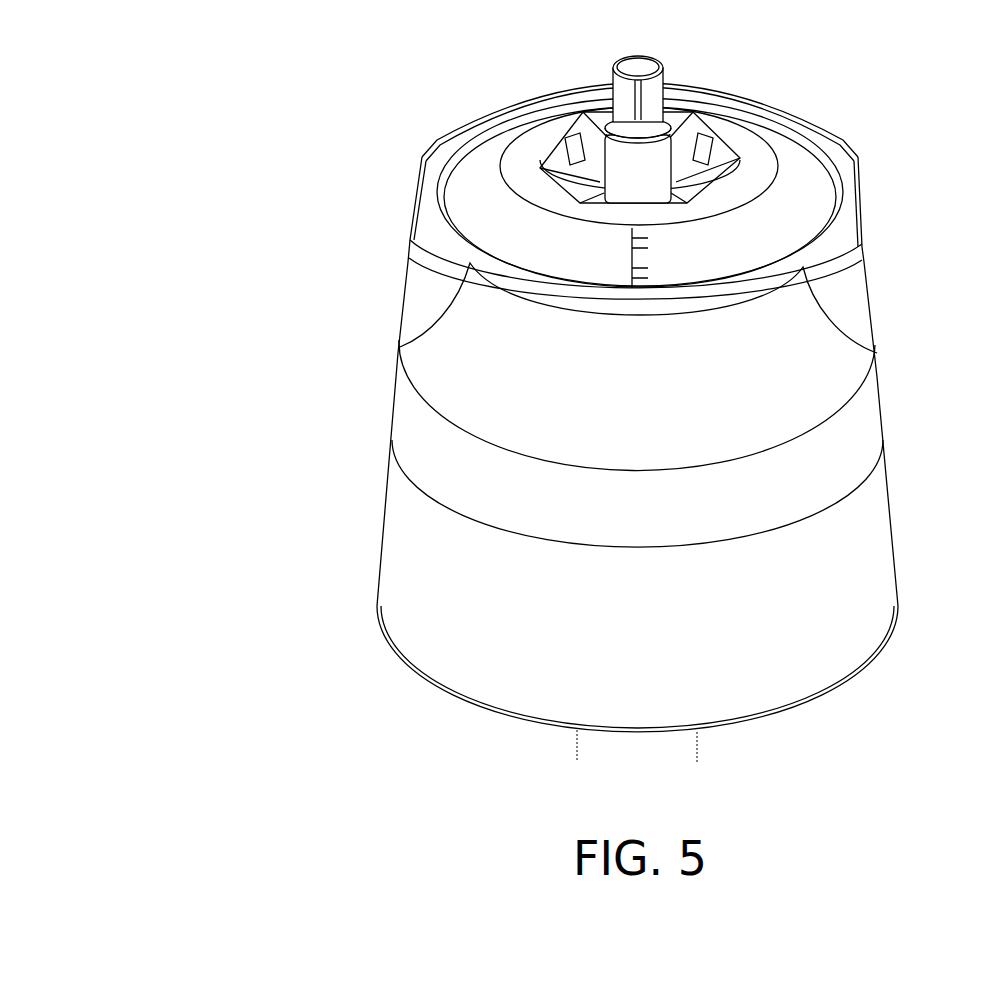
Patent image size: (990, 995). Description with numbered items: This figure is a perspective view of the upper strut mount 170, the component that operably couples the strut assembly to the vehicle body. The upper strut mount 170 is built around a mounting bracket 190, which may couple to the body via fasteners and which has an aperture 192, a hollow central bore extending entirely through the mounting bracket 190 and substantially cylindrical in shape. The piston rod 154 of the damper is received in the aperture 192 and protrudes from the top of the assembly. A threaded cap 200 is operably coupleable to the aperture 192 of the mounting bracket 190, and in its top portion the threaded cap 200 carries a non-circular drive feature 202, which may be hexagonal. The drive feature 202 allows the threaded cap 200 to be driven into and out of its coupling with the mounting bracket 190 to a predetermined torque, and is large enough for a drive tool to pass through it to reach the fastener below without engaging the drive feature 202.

The upper strut mount 170 is at (214, 70).
The piston rod 154 is at (622, 157).
The threaded cap 200 is at (503, 215).
The non-circular drive feature 202 is at (715, 143).
The aperture 192 is at (837, 182).
The mounting bracket 190 is at (493, 602).